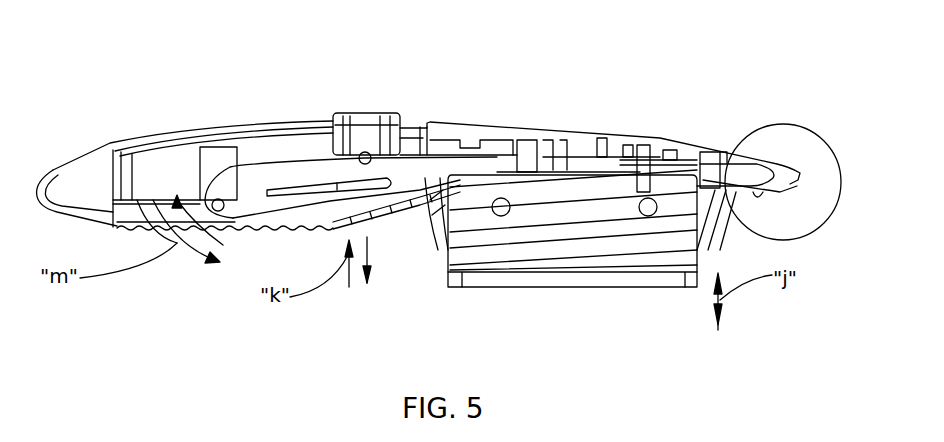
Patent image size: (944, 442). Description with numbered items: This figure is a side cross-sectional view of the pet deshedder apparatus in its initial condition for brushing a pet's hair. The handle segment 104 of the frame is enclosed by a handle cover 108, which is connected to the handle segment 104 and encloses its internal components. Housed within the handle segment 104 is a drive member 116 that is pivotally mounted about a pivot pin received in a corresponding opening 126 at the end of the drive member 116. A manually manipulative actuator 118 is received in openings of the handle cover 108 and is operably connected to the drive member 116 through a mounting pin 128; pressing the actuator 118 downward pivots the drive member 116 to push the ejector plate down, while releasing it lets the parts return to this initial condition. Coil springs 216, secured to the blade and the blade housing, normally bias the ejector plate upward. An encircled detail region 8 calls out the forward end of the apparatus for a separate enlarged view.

The handle segment 104 is at (160, 130).
The drive member 116 is at (280, 178).
The actuator 118 is at (378, 112).
The mounting pin 128 is at (363, 152).
The coil springs 216 is at (520, 143).
The handle cover 108 is at (543, 133).
The opening 126 is at (233, 205).
The detail view circle 8 is at (793, 126).